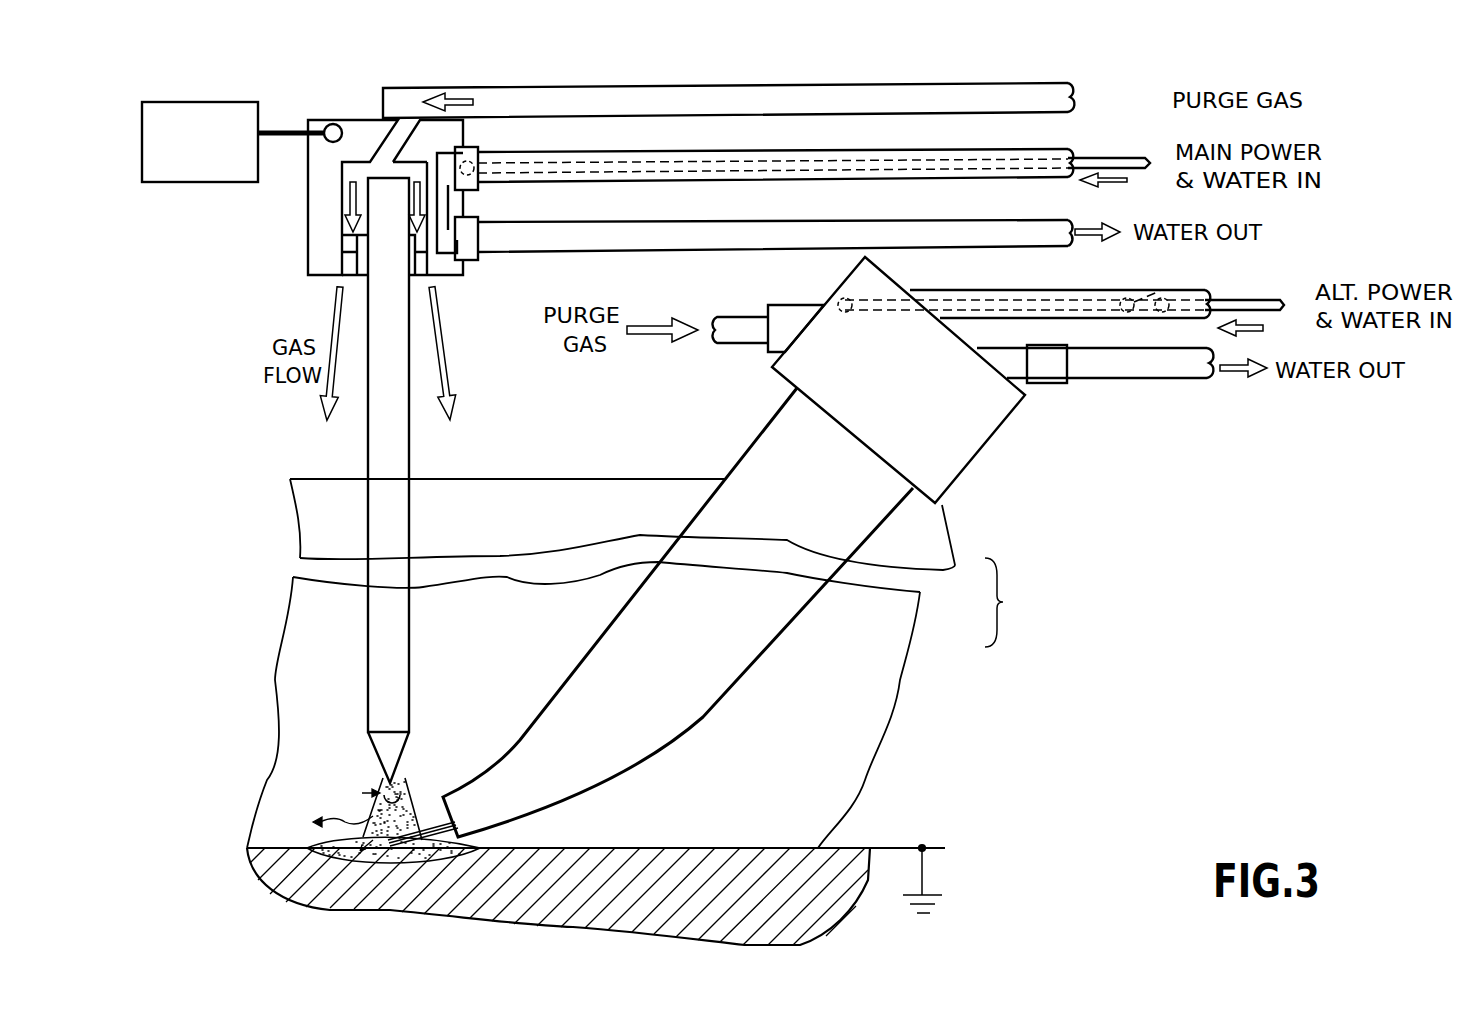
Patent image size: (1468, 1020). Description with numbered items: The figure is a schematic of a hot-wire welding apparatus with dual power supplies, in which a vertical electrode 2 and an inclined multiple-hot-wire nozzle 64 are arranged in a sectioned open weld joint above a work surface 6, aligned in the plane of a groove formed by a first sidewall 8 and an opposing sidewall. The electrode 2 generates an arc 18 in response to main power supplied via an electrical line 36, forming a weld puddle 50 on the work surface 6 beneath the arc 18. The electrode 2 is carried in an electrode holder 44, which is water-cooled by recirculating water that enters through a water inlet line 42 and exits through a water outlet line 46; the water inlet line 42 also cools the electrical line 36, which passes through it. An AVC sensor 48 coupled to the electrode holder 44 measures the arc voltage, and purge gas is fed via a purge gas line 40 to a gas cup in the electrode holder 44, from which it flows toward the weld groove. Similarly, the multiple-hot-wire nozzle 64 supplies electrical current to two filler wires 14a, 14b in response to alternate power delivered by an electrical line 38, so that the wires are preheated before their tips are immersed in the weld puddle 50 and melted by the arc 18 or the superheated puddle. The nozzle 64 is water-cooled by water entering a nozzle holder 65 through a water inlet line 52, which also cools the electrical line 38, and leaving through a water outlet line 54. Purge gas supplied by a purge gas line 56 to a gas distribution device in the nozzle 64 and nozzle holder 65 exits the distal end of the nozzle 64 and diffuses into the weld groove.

The electrode 2 is at (410, 461).
The work surface 6 is at (720, 845).
The first sidewall 8 is at (490, 534).
The filler wire 14a is at (433, 818).
The filler wire 14b is at (468, 832).
The arc 18 is at (406, 795).
The electrical line 36 is at (1093, 158).
The electrical line 38 is at (1233, 298).
The purge gas line 40 is at (853, 83).
The water inlet line 42 is at (878, 148).
The electrode holder 44 is at (308, 240).
The water outlet line 46 is at (900, 220).
The AVC sensor 48 is at (218, 184).
The weld puddle 50 is at (322, 848).
The water inlet line 52 is at (1068, 285).
The water outlet line 54 is at (1103, 382).
The purge gas line 56 is at (743, 345).
The multiple-hot-wire nozzle 64 is at (714, 717).
The nozzle holder 65 is at (992, 435).